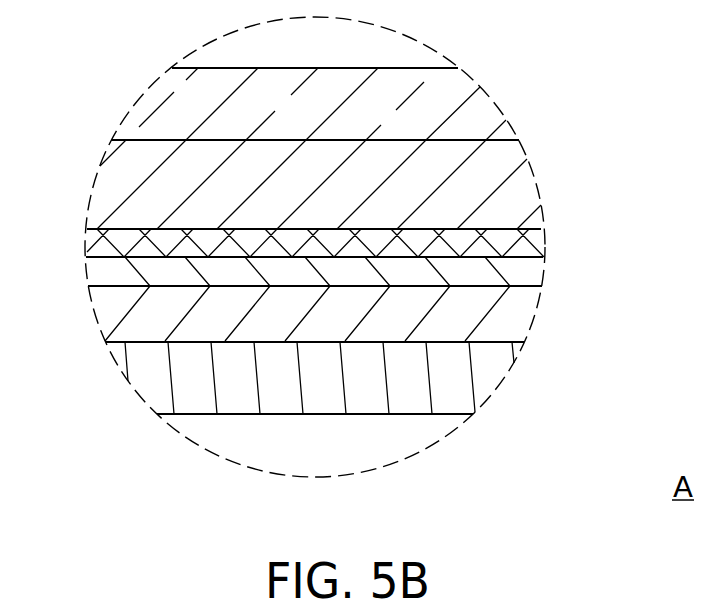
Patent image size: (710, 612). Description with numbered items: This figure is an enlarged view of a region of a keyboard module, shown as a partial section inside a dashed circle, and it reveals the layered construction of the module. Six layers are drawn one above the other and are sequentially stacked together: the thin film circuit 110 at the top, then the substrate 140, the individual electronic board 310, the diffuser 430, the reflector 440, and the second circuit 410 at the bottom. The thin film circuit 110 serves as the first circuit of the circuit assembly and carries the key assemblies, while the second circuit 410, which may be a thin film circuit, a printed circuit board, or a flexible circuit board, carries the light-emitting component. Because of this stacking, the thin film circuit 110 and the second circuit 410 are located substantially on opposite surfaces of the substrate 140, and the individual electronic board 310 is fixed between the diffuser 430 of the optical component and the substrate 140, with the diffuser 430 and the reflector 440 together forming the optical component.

The thin film circuit 110 is at (433, 108).
The substrate 140 is at (460, 197).
The individual electronic board 310 is at (532, 245).
The diffuser 430 is at (530, 272).
The reflector 440 is at (517, 315).
The second circuit 410 is at (487, 376).